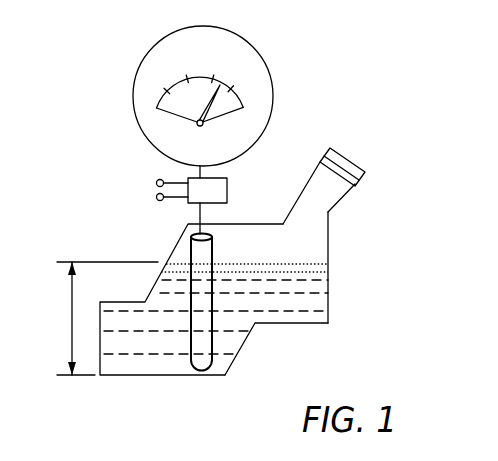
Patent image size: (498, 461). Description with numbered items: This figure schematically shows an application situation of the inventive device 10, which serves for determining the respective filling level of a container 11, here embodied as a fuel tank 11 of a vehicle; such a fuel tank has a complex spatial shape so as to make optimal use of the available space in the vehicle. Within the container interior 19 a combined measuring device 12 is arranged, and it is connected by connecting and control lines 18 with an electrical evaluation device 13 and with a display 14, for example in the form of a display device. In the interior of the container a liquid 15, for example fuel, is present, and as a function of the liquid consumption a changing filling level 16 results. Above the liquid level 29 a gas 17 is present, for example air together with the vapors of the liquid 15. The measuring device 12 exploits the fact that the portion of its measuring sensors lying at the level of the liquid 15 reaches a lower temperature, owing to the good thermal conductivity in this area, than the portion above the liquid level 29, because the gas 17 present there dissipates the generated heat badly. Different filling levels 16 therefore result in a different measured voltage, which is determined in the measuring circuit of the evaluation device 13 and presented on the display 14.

The device 10 is at (124, 156).
The container 11 is at (317, 293).
The combined measuring device 12 is at (212, 240).
The electrical evaluation device 13 is at (205, 193).
The display 14 is at (264, 69).
The liquid 15 is at (300, 312).
The filling level 16 is at (71, 338).
The gas 17 is at (305, 222).
The connecting and control lines 18 is at (192, 213).
The container interior 19 is at (316, 257).
The liquid level 29 is at (298, 258).